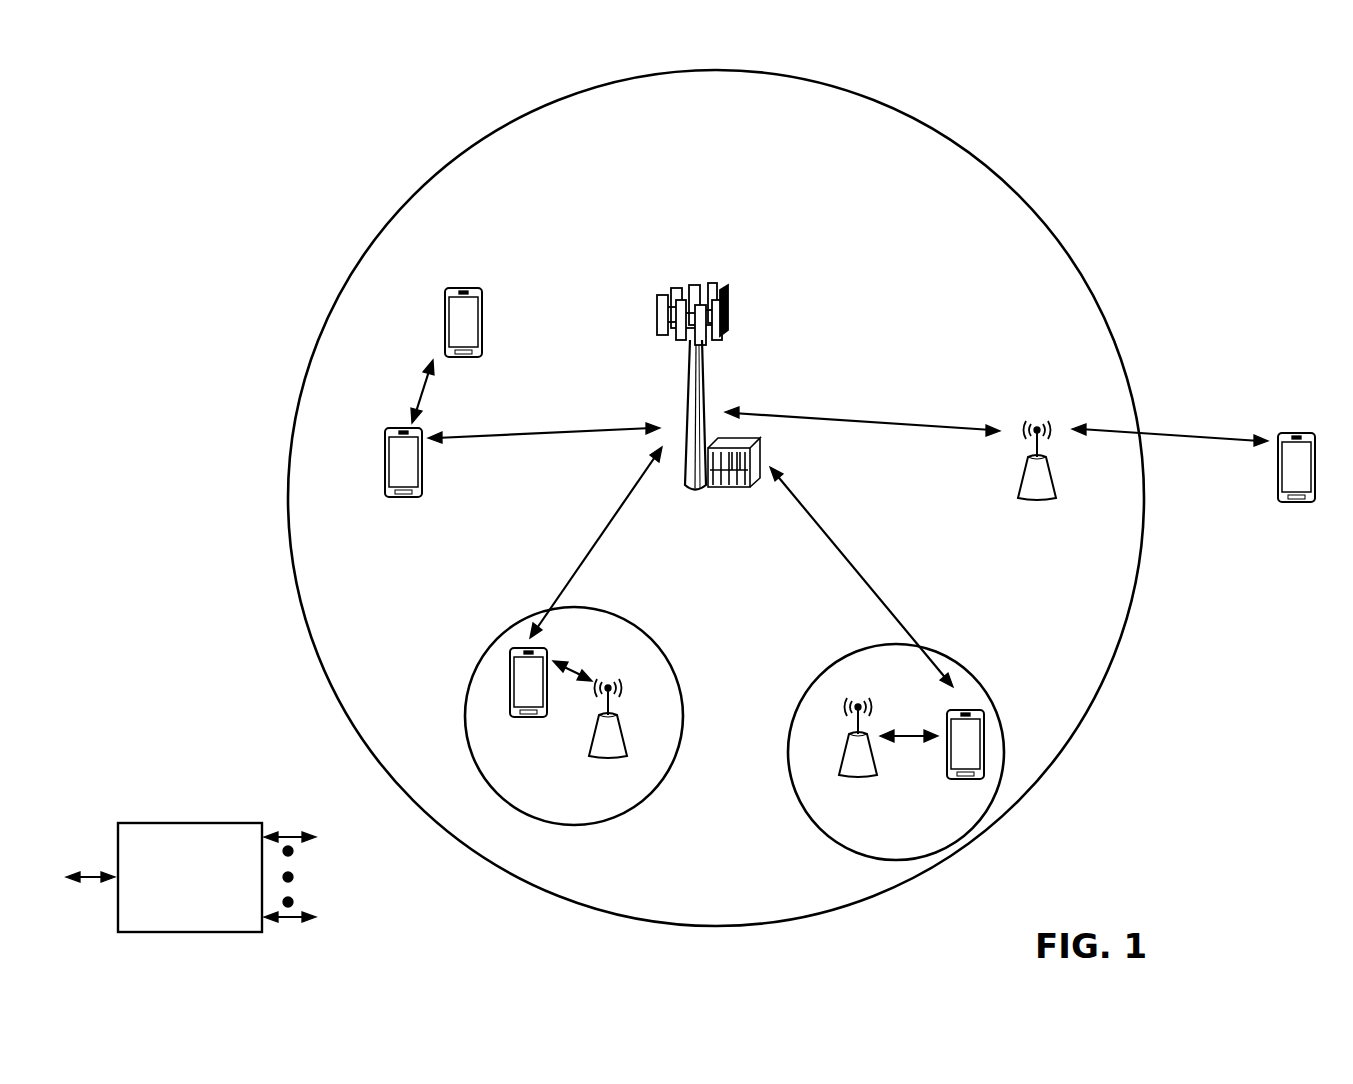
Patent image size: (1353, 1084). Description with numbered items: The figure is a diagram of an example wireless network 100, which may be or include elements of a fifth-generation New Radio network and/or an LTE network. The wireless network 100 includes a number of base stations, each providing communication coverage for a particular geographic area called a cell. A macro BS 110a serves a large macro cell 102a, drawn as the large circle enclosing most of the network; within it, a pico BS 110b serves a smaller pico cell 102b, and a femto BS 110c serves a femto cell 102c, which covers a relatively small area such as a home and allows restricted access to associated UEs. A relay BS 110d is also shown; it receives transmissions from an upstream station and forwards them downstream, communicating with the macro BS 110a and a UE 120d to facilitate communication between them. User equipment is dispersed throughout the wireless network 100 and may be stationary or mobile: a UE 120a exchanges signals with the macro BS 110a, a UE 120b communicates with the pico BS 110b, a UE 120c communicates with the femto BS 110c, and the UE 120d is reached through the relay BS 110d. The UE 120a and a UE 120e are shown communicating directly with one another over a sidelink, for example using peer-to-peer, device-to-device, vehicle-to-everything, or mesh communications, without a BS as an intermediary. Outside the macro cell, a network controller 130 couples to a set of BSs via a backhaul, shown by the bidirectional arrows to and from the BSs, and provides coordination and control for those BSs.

The wireless network 100 is at (170, 66).
The macro cell 102a is at (1001, 178).
The pico cell 102b is at (666, 657).
The femto cell 102c is at (832, 664).
The macro BS 110a is at (700, 280).
The pico BS 110b is at (630, 750).
The femto BS 110c is at (843, 760).
The relay BS 110d is at (1038, 422).
The UE 120a is at (385, 460).
The UE 120b is at (520, 718).
The UE 120c is at (958, 780).
The UE 120d is at (1310, 433).
The UE 120e is at (446, 312).
The network controller 130 is at (187, 822).